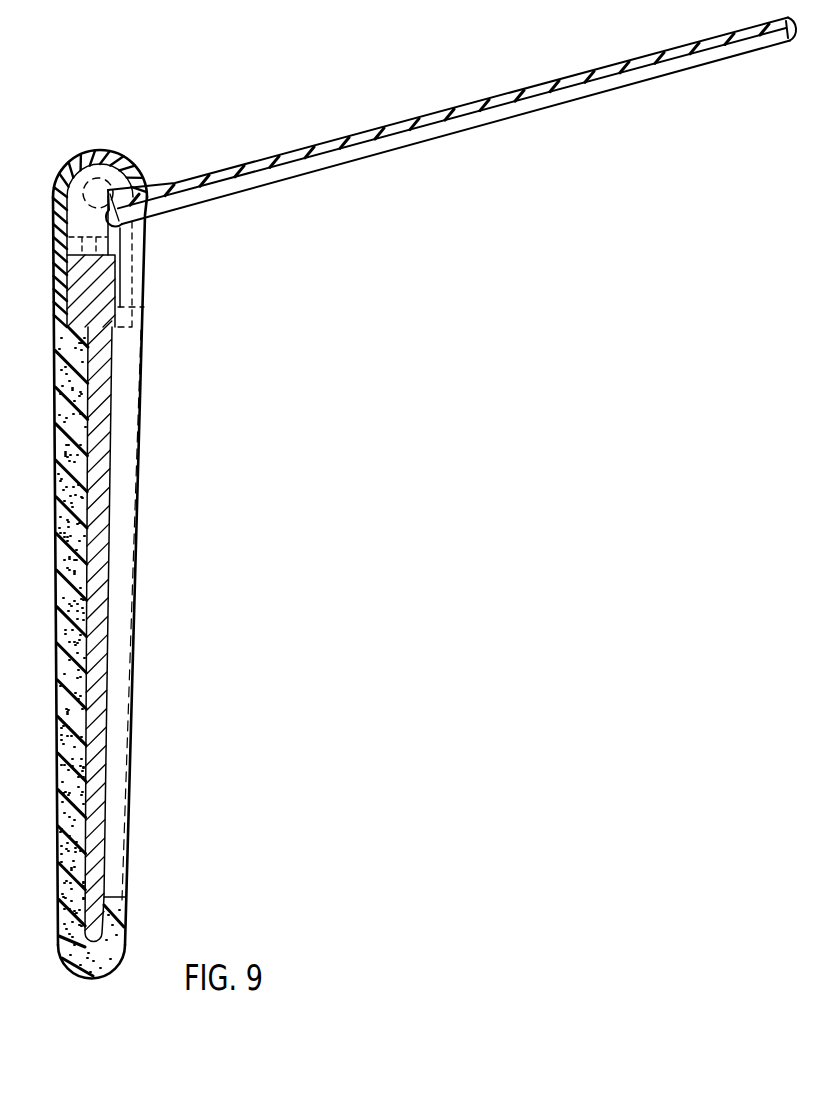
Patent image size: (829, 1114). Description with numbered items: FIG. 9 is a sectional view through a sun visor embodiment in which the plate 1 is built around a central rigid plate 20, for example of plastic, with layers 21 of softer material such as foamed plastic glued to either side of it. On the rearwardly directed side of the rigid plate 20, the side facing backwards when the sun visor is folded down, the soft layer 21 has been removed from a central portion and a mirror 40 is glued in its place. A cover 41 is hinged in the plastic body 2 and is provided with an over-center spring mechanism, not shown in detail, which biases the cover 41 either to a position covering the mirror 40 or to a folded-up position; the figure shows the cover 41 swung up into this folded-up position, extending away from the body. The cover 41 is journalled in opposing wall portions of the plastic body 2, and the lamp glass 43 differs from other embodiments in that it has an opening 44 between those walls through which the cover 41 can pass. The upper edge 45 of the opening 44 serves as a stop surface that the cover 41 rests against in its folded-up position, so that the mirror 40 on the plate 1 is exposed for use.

The plate 1 is at (140, 562).
The plastic body 2 is at (105, 118).
The rigid plate 20 is at (96, 389).
The layers of softer material 21 is at (56, 468).
The mirror 40 is at (110, 475).
The cover 41 is at (333, 140).
The lamp glass 43 is at (58, 182).
The opening 44 is at (146, 241).
The upper edge 45 is at (147, 181).